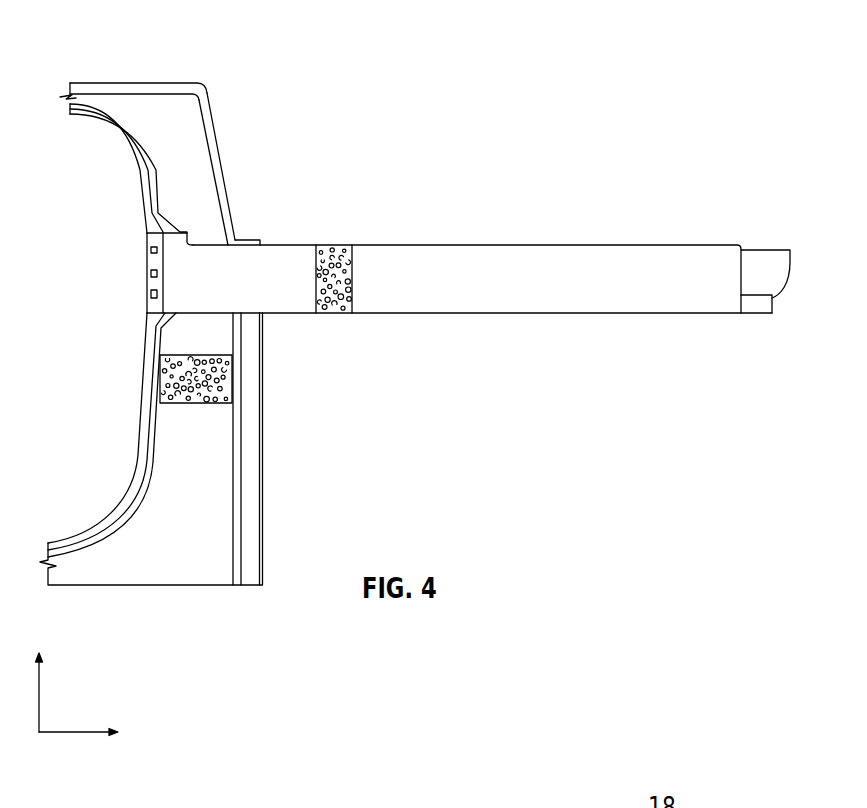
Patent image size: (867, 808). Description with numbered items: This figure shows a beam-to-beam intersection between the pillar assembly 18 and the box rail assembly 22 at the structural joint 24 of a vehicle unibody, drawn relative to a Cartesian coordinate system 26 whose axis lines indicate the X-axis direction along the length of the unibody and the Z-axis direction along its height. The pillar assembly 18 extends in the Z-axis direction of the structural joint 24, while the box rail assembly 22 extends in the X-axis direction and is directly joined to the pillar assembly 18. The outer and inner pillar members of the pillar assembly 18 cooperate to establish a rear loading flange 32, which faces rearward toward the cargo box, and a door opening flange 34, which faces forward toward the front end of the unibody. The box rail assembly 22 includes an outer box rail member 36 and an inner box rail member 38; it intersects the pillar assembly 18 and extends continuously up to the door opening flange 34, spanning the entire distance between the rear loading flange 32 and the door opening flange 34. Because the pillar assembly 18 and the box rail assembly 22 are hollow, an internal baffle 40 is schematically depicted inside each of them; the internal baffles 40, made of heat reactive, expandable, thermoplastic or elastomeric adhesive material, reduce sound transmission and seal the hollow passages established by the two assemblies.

The pillar assembly 18 is at (184, 158).
The box rail assembly 22 is at (472, 271).
The structural joint 24 is at (253, 169).
The Cartesian coordinate system 26 is at (39, 742).
The rear loading flange 32 is at (246, 224).
The door opening flange 34 is at (145, 402).
The outer box rail member 36 is at (763, 289).
The inner box rail member 38 is at (496, 300).
The internal baffle 40 is at (333, 313).